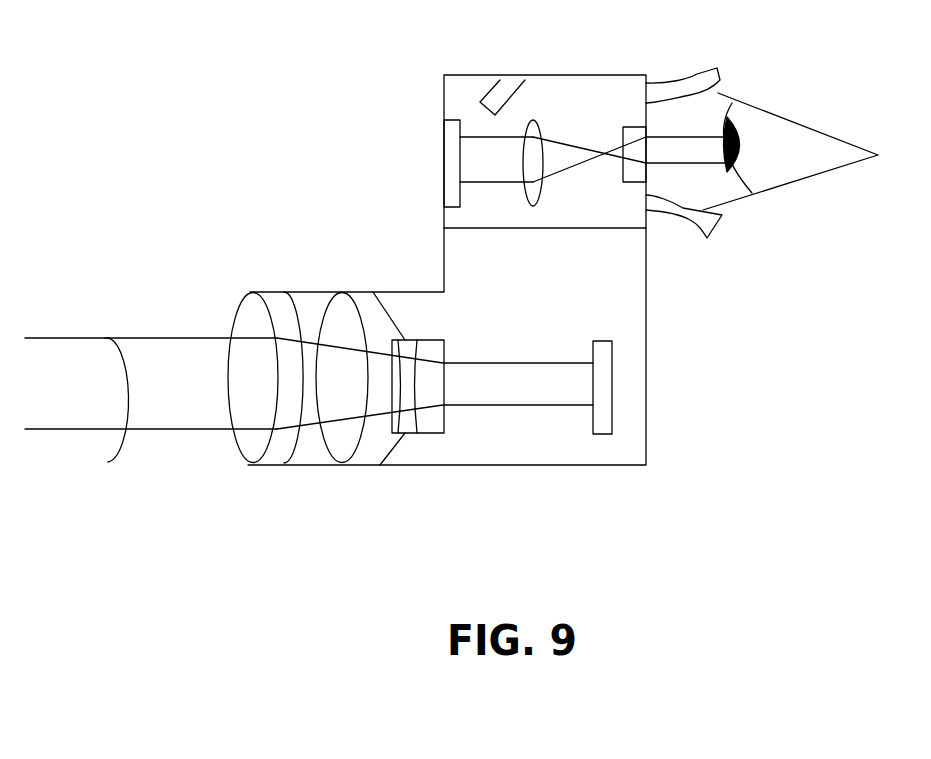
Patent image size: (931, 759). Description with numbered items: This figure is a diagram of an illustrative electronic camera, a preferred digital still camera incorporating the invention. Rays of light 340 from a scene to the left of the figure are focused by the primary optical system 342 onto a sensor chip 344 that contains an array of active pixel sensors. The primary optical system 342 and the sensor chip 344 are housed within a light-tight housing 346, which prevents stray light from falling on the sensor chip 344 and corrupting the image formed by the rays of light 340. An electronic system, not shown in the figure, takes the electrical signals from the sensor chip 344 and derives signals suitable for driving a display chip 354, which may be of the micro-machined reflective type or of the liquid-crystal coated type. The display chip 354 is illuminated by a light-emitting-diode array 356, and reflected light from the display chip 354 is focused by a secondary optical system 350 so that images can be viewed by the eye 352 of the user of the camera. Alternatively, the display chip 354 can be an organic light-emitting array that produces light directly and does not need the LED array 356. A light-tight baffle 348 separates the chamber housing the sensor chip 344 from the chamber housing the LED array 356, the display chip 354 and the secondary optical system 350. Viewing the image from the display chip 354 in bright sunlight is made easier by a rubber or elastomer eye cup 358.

The rays of light 340 is at (105, 432).
The primary optical system 342 is at (253, 475).
The sensor chip 344 is at (603, 372).
The light-tight housing 346 is at (558, 466).
The light-tight baffle 348 is at (537, 229).
The secondary optical system 350 is at (546, 128).
The eye 352 is at (803, 133).
The display chip 354 is at (450, 155).
The light-emitting-diode (LED) array 356 is at (506, 83).
The eye cup 358 is at (699, 78).